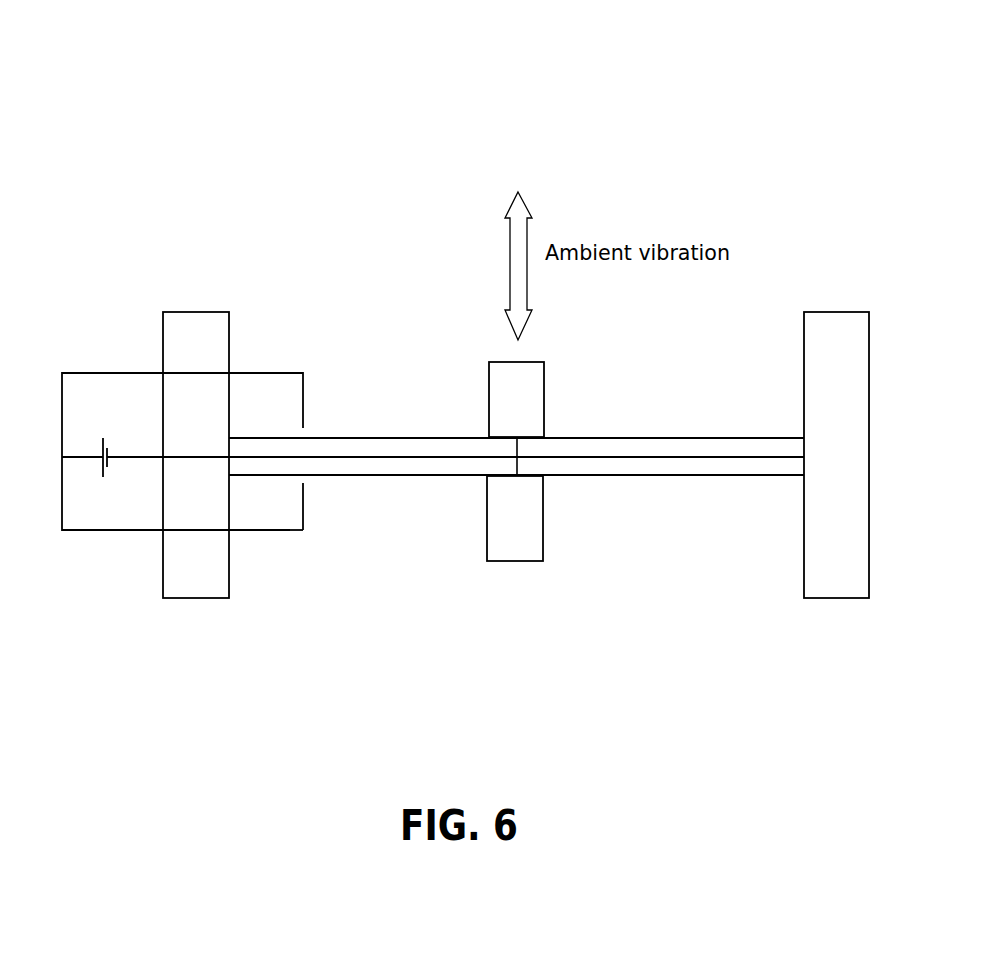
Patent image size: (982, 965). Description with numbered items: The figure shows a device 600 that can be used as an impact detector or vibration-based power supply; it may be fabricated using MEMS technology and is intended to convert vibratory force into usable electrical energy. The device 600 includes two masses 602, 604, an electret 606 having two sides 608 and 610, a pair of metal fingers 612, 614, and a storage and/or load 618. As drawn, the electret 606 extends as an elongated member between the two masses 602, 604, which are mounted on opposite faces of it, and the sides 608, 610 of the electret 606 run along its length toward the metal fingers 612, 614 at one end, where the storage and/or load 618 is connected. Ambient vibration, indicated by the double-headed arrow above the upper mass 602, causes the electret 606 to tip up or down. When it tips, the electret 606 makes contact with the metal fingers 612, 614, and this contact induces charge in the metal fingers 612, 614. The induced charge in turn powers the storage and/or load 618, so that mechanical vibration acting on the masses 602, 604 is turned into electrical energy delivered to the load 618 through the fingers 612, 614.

The device 600 is at (291, 110).
The mass 602 is at (520, 362).
The mass 604 is at (500, 561).
The electret 606 is at (697, 492).
The side 608 is at (418, 476).
The side 610 is at (348, 438).
The metal finger 612 is at (303, 373).
The metal finger 614 is at (292, 531).
The storage and/or load 618 is at (102, 440).